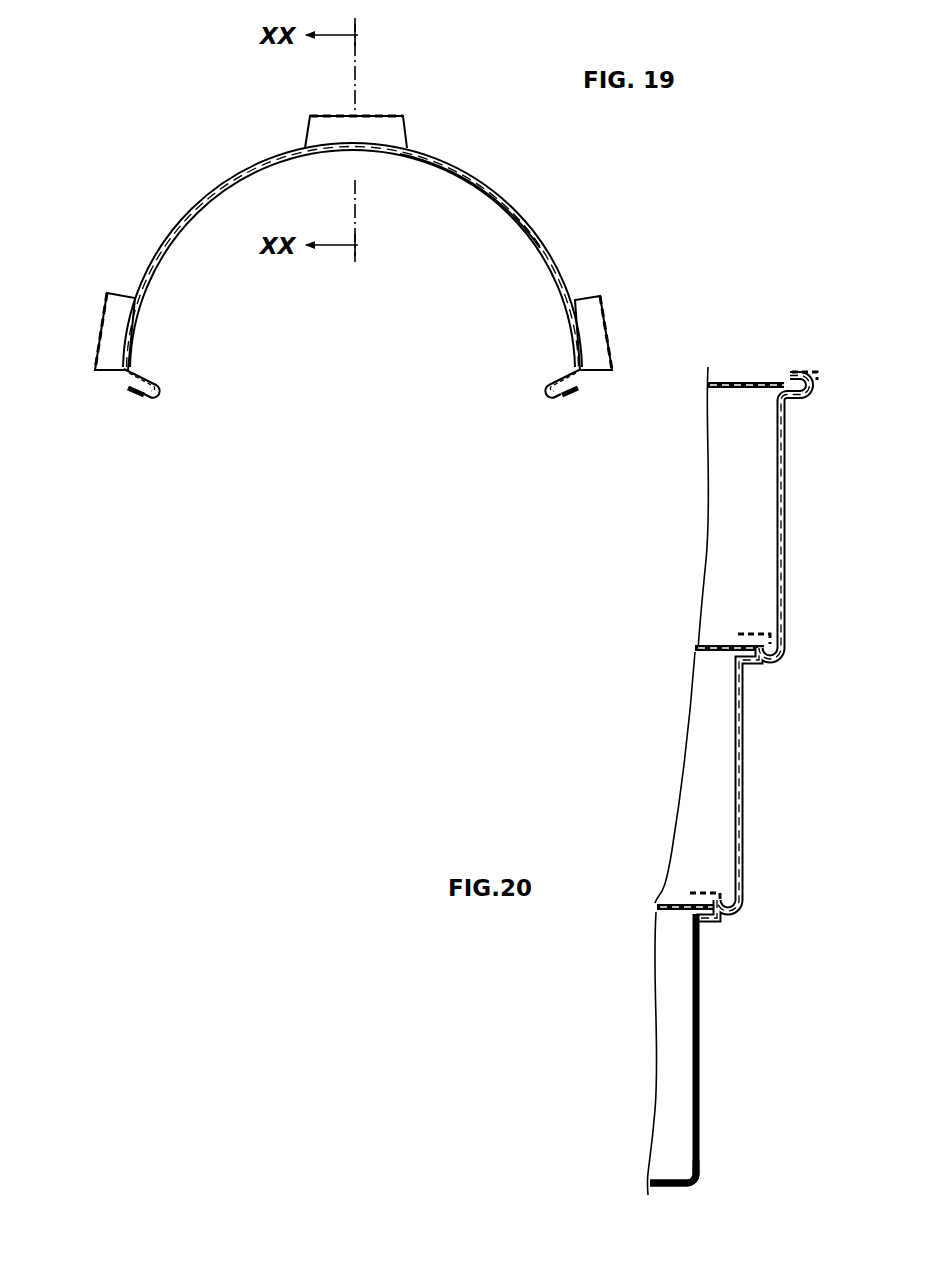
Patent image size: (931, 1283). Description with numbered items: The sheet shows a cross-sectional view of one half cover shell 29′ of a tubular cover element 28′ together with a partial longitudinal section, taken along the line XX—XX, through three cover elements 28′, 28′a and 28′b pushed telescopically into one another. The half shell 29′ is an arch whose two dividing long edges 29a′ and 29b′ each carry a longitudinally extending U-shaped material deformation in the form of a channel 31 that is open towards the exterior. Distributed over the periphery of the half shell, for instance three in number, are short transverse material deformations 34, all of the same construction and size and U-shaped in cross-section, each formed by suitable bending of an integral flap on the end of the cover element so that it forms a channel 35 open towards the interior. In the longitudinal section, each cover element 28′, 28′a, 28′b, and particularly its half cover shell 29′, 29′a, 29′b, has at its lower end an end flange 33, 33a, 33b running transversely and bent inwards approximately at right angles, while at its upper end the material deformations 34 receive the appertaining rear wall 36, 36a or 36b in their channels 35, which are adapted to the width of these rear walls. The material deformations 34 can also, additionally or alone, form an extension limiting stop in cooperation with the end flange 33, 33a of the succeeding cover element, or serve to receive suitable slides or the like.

In FIG. 19, the tubular cover element 28′ is at (209, 188).
In FIG. 20, the tubular cover element 28′ is at (788, 498).
In FIG. 19, the half cover shell 29′ is at (504, 190).
In FIG. 20, the half cover shell 29′ is at (788, 460).
In FIG. 19, the dividing long edge 29a′ is at (126, 376).
In FIG. 19, the dividing long edge 29b′ is at (582, 376).
In FIG. 19, the channel 31 is at (142, 399).
In FIG. 19, the material deformation 34 is at (386, 116).
In FIG. 20, the material deformation 34 is at (812, 384).
In FIG. 20, the channel 35 is at (803, 376).
In FIG. 20, the rear wall 36 is at (738, 390).
In FIG. 20, the rear wall 36a is at (698, 656).
In FIG. 20, the rear wall 36b is at (658, 913).
In FIG. 20, the end flange 33 is at (770, 666).
In FIG. 20, the end flange 33a is at (728, 926).
In FIG. 20, the end flange 33b is at (680, 1188).
In FIG. 20, the half cover shell 29′a is at (745, 738).
In FIG. 20, the tubular cover element 28′a is at (745, 776).
In FIG. 20, the half cover shell 29′b is at (703, 1019).
In FIG. 20, the tubular cover element 28′b is at (703, 1062).